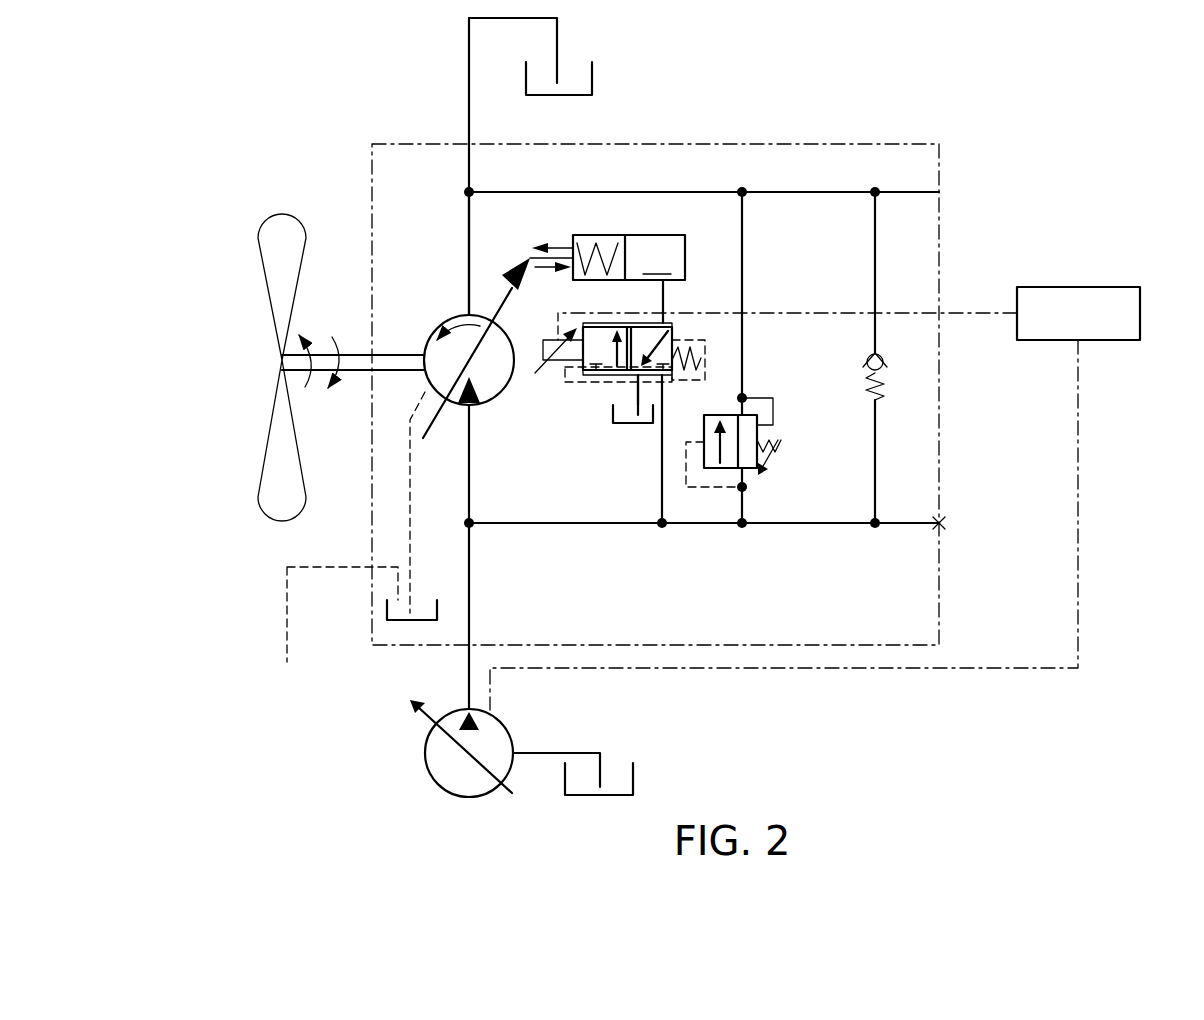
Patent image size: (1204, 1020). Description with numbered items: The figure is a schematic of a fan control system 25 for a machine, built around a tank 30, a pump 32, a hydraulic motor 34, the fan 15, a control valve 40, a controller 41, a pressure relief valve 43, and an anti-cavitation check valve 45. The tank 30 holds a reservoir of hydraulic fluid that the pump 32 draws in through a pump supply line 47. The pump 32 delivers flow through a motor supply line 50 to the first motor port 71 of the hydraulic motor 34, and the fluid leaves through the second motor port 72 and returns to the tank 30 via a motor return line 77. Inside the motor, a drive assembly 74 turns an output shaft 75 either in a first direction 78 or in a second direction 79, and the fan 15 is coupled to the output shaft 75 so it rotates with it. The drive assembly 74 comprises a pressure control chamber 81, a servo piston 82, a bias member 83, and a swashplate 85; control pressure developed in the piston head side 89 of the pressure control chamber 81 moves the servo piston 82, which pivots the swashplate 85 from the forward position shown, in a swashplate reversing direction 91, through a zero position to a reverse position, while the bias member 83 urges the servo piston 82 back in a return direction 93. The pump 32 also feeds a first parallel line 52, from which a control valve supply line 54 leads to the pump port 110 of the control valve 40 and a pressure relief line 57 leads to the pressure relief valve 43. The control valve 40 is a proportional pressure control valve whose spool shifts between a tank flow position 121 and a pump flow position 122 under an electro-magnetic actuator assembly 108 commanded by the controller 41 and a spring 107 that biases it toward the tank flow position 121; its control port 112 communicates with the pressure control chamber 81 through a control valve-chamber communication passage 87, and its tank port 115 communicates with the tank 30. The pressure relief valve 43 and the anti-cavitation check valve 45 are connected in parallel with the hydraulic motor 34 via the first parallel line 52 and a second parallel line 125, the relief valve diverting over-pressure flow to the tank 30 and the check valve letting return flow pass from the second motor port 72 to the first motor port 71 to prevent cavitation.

The fan 15 is at (263, 265).
The fan control system 25 is at (202, 113).
The tank 30 is at (577, 93).
The pump 32 is at (430, 773).
The hydraulic motor 34 is at (432, 330).
The control valve 40 is at (595, 377).
The controller 41 is at (1098, 287).
The pressure relief valve 43 is at (757, 470).
The anti-cavitation check valve 45 is at (862, 380).
The pump supply line 47 is at (553, 752).
The motor supply line 50 is at (467, 450).
The first parallel line 52 is at (582, 527).
The control valve supply line 54 is at (660, 487).
The pressure relief line 57 is at (742, 507).
The first motor port 71 is at (477, 403).
The second motor port 72 is at (467, 312).
The drive assembly 74 is at (517, 248).
The output shaft 75 is at (387, 355).
The motor return line 77 is at (467, 210).
The first direction 78 is at (305, 388).
The second direction 79 is at (332, 337).
The pressure control chamber 81 is at (607, 233).
The servo piston 82 is at (627, 248).
The bias member 83 is at (590, 242).
The swashplate 85 is at (500, 300).
The control valve-chamber communication passage 87 is at (665, 290).
The piston head side 89 is at (657, 262).
The swashplate reversing direction 91 is at (453, 317).
The return direction 93 is at (540, 270).
The spring 107 is at (686, 372).
The electro-magnetic actuator assembly 108 is at (544, 361).
The pump port 110 is at (663, 380).
The control port 112 is at (665, 333).
The tank port 115 is at (638, 383).
The tank flow position 121 is at (670, 335).
The pump flow position 122 is at (603, 343).
The second parallel line 125 is at (668, 190).